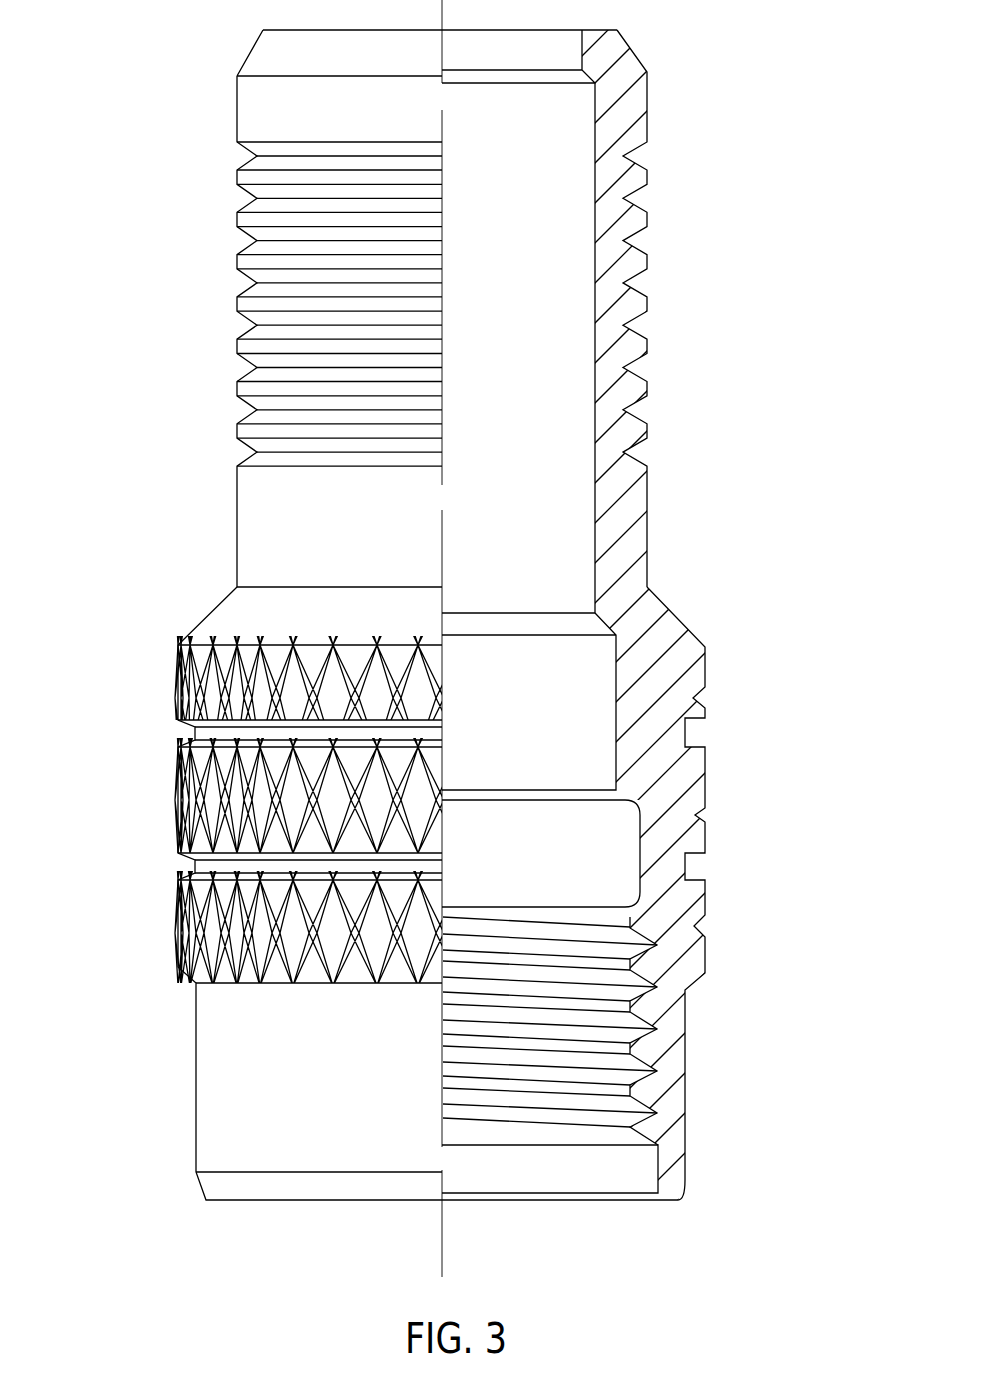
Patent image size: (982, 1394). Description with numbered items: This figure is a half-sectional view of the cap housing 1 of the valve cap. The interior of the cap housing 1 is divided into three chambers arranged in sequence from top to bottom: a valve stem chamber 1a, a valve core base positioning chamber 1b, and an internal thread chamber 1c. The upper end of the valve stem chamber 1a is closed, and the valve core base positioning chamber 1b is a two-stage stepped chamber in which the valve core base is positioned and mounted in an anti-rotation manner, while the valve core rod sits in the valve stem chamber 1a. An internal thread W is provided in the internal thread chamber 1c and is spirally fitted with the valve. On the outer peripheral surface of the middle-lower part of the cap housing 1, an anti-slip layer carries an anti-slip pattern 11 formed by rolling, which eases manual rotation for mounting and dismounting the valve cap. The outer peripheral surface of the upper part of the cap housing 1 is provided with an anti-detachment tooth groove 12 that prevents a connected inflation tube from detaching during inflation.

The cap housing 1 is at (295, 550).
The valve stem chamber 1a is at (543, 338).
The valve core base positioning chamber 1b is at (555, 760).
The internal thread chamber 1c is at (487, 1135).
The anti-slip pattern 11 is at (200, 812).
The anti-detachment tooth groove 12 is at (640, 200).
The internal thread W is at (630, 1048).